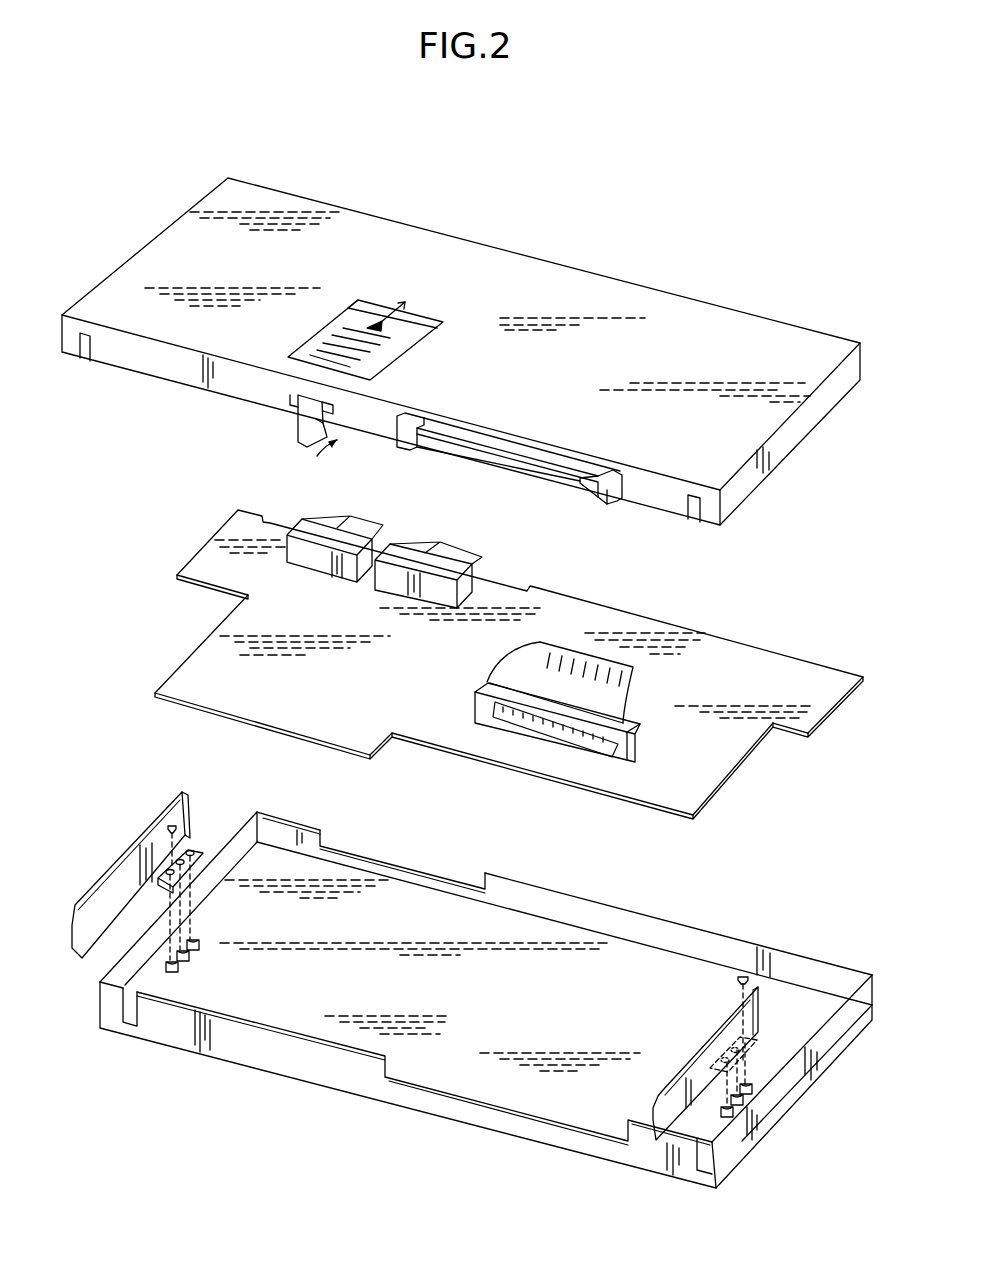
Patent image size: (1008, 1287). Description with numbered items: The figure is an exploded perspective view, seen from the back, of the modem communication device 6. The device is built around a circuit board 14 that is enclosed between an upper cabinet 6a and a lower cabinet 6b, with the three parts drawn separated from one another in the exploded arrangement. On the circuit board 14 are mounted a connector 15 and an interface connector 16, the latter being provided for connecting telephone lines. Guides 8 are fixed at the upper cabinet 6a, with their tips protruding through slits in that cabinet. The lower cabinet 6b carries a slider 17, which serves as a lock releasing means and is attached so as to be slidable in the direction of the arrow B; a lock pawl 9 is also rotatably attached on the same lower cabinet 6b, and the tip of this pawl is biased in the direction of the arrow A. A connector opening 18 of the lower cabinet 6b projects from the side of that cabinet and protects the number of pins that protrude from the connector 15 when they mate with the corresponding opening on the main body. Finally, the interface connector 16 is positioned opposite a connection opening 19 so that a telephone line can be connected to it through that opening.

The modem communication device 6 is at (126, 615).
The upper cabinet 6a is at (372, 1105).
The lower cabinet 6b is at (607, 265).
The guides 8 is at (113, 850).
The lock pawl 9 is at (297, 430).
The circuit board 14 is at (758, 643).
The connector 15 is at (635, 742).
The interface connector 16 is at (463, 543).
The slider 17 is at (387, 350).
The connector opening 18 is at (588, 488).
The connection opening 19 is at (457, 877).